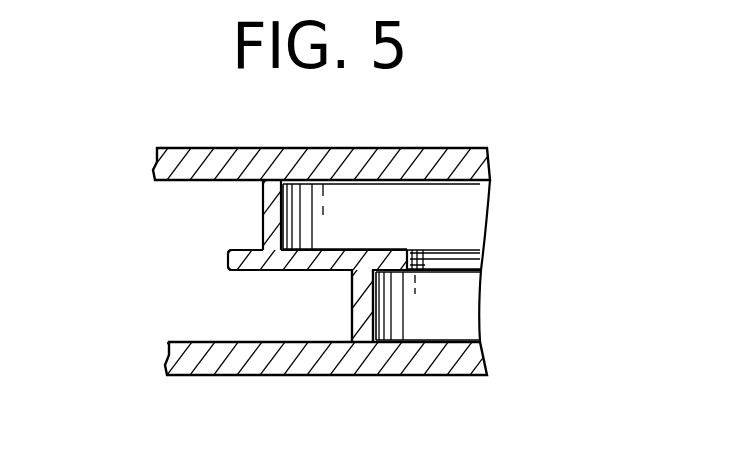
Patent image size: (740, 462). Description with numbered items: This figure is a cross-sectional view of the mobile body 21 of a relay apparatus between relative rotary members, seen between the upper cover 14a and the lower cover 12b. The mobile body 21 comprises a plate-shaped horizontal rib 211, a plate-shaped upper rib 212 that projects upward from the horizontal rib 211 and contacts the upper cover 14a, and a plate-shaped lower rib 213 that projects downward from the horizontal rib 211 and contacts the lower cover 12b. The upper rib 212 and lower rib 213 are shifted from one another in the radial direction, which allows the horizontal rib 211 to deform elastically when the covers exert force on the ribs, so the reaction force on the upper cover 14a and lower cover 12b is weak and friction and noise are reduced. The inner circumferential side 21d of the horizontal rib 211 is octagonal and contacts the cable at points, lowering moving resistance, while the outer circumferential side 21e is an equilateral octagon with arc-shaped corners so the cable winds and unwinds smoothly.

The upper cover 14a is at (185, 147).
The lower cover 12b is at (207, 342).
The mobile body 21 is at (226, 253).
The upper rib 212 is at (262, 211).
The lower rib 213 is at (373, 317).
The horizontal rib 211 is at (333, 248).
The inner circumferential side 21d is at (450, 254).
The outer circumferential side 21e is at (229, 258).